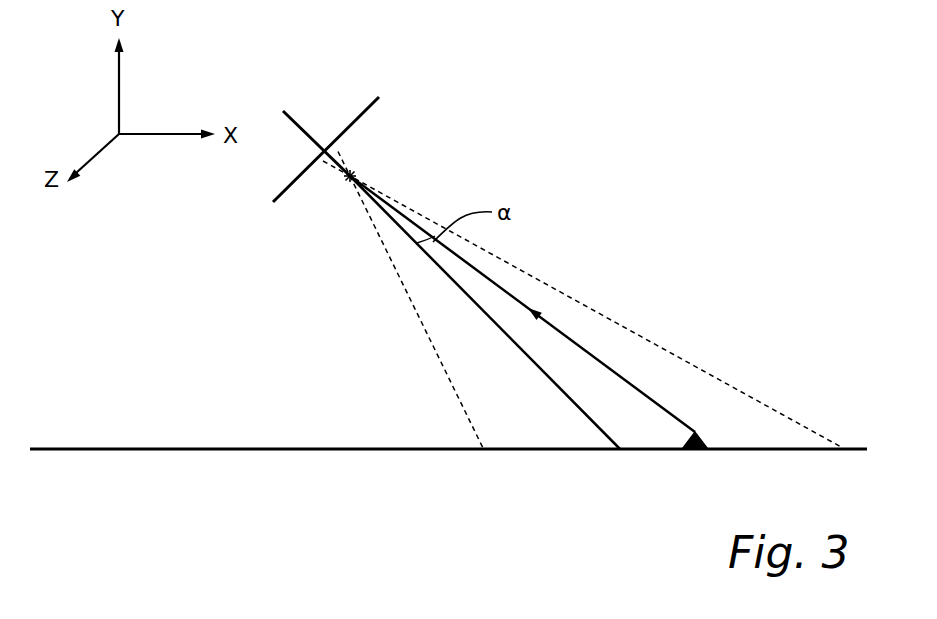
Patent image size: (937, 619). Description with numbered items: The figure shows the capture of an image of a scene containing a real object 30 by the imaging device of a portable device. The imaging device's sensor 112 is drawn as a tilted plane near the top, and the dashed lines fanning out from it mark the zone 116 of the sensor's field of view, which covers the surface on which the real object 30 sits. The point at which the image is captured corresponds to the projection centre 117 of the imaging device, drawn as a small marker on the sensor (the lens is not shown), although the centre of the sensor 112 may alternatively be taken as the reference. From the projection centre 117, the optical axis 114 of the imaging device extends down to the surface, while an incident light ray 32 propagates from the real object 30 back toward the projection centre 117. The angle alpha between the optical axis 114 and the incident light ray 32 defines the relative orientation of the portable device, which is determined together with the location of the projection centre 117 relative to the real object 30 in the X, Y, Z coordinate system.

The sensor 112 is at (358, 117).
The projection centre 117 is at (354, 175).
The optical axis 114 is at (459, 288).
The zone of the field of view 116 is at (620, 325).
The incident light ray 32 is at (652, 400).
The real object 30 is at (682, 474).